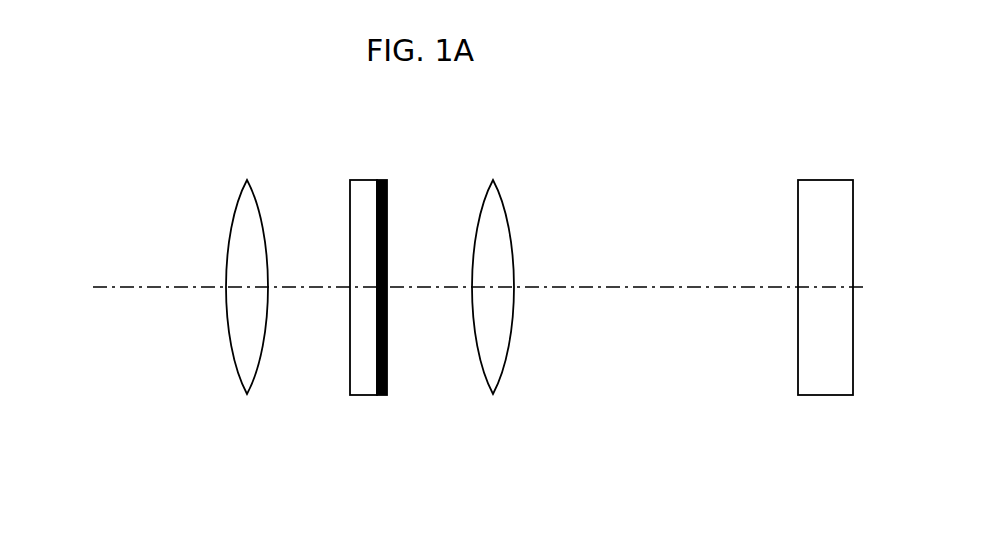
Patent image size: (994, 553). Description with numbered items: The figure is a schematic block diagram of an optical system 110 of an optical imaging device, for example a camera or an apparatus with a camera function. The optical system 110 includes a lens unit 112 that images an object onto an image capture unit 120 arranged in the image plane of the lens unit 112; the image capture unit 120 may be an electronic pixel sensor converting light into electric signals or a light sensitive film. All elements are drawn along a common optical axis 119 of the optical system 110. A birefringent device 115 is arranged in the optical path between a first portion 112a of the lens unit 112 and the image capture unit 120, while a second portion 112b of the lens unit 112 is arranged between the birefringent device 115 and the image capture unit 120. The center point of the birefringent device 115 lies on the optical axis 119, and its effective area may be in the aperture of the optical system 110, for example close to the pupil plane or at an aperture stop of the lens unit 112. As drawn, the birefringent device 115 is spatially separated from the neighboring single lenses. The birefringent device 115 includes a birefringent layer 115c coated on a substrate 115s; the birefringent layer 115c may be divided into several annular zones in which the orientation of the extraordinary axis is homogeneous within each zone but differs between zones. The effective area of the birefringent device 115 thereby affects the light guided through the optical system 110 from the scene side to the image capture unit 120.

The optical system 110 is at (373, 309).
The lens unit 112 is at (373, 244).
The first portion of the lens unit 112a is at (238, 190).
The second portion of the lens unit 112b is at (552, 271).
The birefringent device 115 is at (369, 300).
The substrate 115s is at (350, 215).
The birefringent layer 115c is at (388, 225).
The optical axis 119 is at (108, 283).
The image capture unit 120 is at (798, 213).